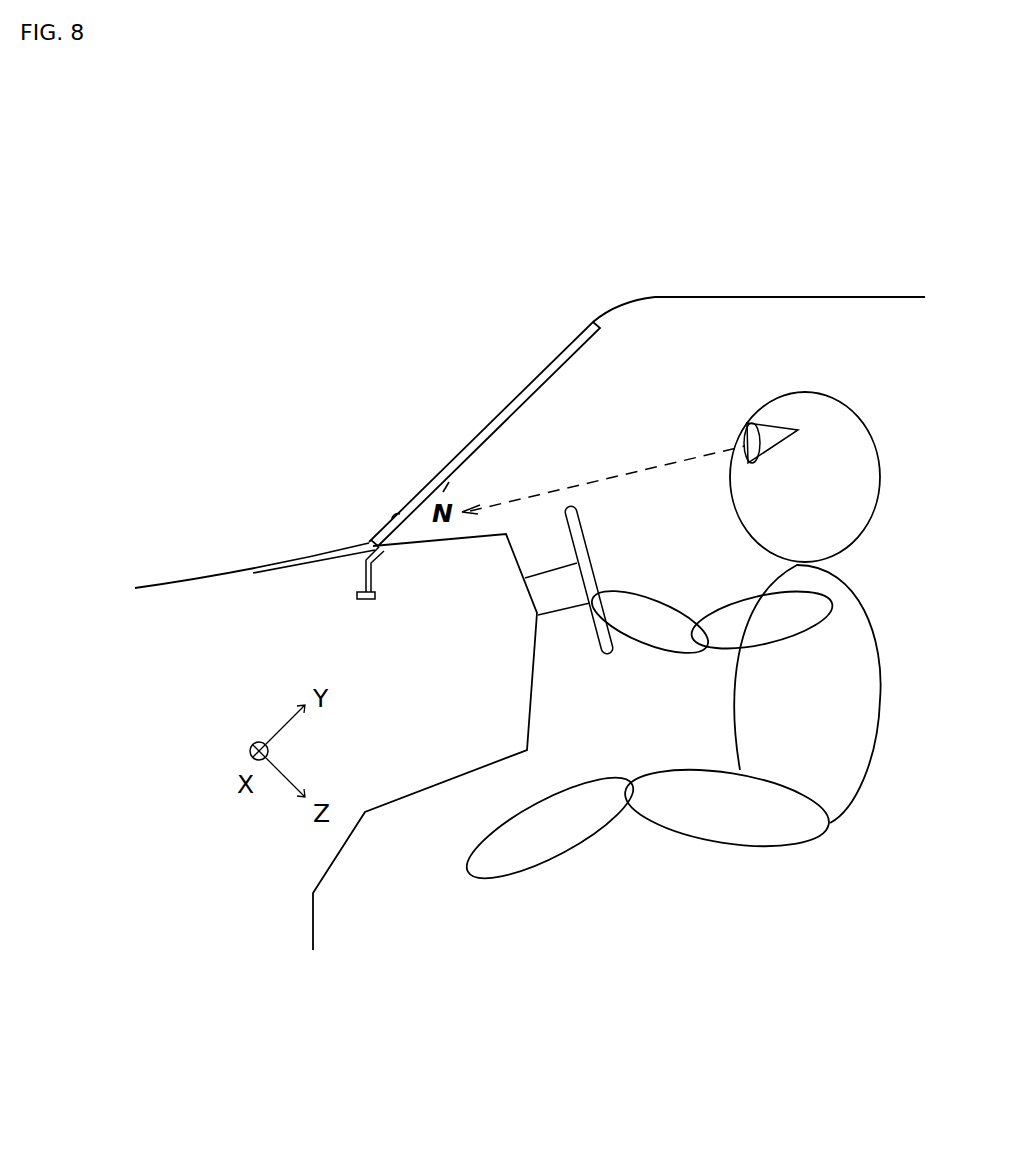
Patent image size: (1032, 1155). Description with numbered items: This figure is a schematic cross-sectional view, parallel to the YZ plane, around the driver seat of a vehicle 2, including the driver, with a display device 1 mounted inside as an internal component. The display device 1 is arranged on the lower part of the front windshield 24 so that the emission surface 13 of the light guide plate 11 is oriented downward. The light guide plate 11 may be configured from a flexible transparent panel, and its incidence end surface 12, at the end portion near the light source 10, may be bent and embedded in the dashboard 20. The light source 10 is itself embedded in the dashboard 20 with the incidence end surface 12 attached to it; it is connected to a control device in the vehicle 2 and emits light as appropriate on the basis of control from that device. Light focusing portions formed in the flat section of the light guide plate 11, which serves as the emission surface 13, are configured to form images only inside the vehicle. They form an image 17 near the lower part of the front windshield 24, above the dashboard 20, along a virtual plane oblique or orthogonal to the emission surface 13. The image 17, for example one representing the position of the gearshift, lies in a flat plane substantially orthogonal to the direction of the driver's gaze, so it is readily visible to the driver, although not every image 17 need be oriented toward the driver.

The display device 1 is at (433, 615).
The vehicle 2 is at (506, 279).
The light source 10 is at (364, 600).
The light guide plate 11 is at (398, 518).
The incidence end surface 12 is at (372, 583).
The emission surface 13 is at (377, 553).
The image 17 is at (447, 507).
The dashboard 20 is at (495, 542).
The front windshield 24 is at (500, 418).